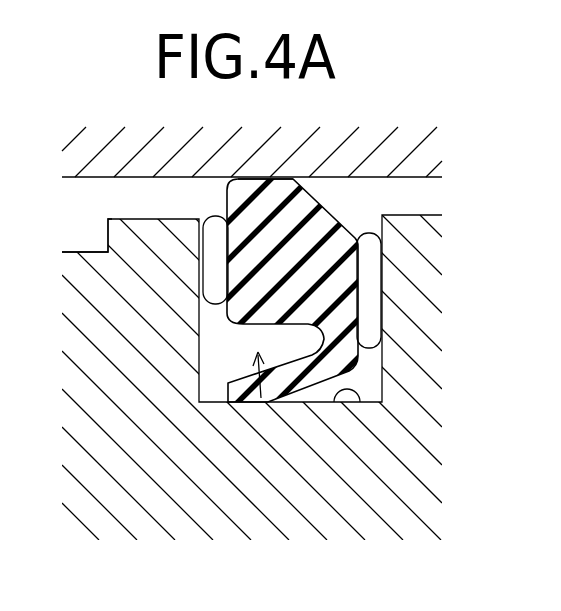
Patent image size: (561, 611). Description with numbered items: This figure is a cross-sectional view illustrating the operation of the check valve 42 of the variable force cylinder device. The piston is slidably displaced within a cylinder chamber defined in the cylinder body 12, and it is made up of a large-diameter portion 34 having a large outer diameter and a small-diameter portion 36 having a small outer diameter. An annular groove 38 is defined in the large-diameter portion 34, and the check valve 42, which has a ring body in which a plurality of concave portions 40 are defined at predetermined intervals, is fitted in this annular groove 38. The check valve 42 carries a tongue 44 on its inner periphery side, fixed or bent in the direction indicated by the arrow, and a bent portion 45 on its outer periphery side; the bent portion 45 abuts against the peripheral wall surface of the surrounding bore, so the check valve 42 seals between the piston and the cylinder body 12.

The cylinder body 12 is at (418, 156).
The large-diameter portion 34 is at (428, 247).
The small-diameter portion 36 is at (95, 252).
The annular groove 38 is at (360, 404).
The concave portions 40 is at (205, 215).
The check valve 42 is at (283, 193).
The tongue 44 is at (259, 401).
The bent portion 45 is at (271, 180).